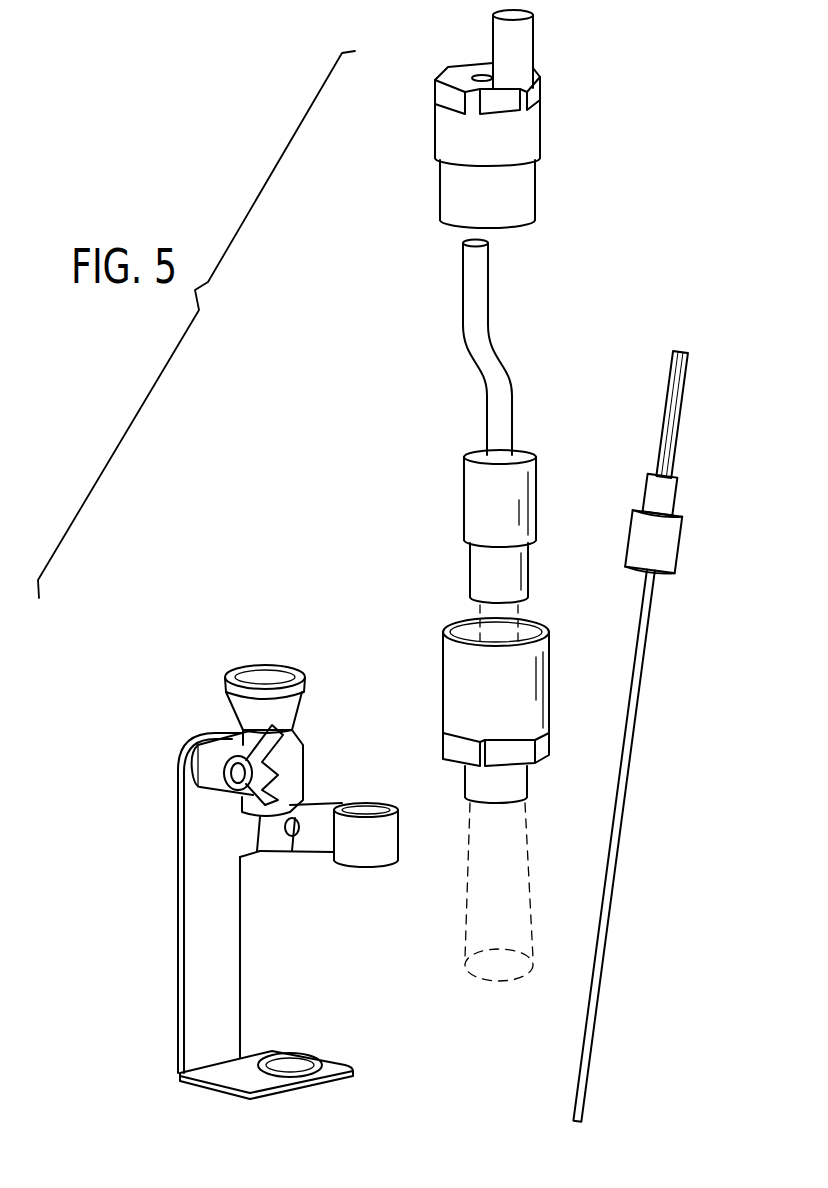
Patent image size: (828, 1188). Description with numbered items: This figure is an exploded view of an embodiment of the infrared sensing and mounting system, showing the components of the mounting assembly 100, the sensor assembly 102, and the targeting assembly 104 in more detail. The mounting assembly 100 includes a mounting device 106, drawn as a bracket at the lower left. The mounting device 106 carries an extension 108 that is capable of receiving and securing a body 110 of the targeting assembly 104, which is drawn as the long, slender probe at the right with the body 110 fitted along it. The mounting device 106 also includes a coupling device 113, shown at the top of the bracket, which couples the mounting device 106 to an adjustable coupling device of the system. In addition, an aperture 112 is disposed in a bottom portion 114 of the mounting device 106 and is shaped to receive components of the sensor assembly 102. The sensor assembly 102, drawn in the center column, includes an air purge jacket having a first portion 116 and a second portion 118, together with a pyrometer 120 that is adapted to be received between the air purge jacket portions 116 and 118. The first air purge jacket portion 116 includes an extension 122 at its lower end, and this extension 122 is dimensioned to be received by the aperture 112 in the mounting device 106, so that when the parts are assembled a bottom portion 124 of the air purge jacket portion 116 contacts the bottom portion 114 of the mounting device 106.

The mounting assembly 100 is at (168, 703).
The sensor assembly 102 is at (443, 480).
The targeting assembly 104 is at (647, 737).
The mounting device 106 is at (193, 815).
The extension 108 is at (367, 849).
The body 110 is at (690, 517).
The aperture 112 is at (292, 1062).
The coupling device 113 is at (303, 690).
The bottom portion 114 is at (265, 1085).
The first portion of air purge jacket 116 is at (445, 679).
The second portion of air purge jacket 118 is at (449, 138).
The pyrometer 120 is at (533, 485).
The extension 122 is at (515, 780).
The bottom portion 124 is at (450, 769).